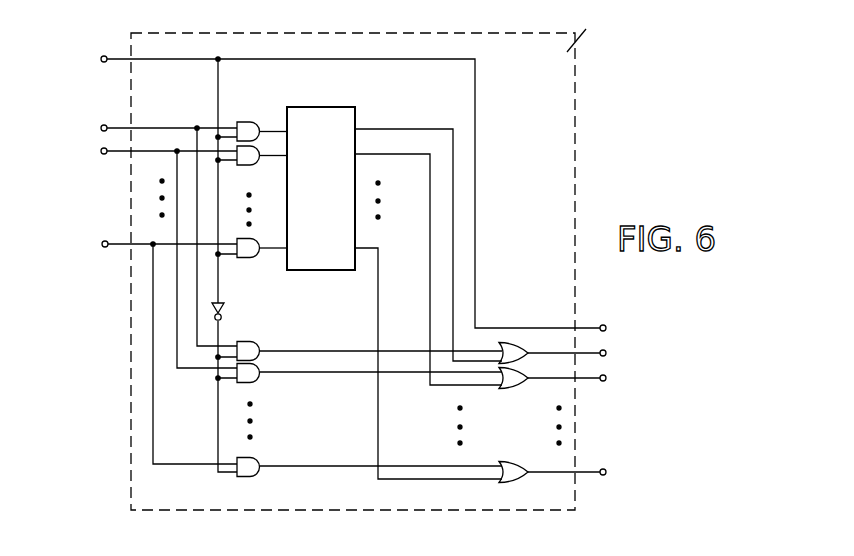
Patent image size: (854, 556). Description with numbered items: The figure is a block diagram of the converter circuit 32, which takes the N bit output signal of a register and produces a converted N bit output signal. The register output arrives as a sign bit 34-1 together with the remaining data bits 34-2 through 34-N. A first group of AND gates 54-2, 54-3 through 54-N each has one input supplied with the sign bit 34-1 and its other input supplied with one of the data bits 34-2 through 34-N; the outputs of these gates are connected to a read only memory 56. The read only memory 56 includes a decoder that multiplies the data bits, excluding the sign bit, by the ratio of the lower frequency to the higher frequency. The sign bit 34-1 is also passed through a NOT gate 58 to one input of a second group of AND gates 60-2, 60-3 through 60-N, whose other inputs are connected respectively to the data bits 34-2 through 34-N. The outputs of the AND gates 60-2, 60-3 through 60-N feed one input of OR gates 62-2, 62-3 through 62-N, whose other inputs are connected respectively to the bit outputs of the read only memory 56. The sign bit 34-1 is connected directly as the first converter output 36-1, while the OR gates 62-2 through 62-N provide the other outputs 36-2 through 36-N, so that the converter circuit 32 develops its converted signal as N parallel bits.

The converter circuit 32 is at (576, 61).
The sign bit 34-1 is at (319, 187).
The bit of the N bit output signal 34-2 is at (137, 230).
The bit of the N bit output signal 34-N is at (137, 347).
The AND gate 54-2 is at (247, 122).
The AND gate 54-3 is at (257, 160).
The AND gate 54-N is at (257, 254).
The read only memory 56 is at (345, 81).
The NOT gate 58 is at (225, 308).
The AND gate 60-2 is at (258, 343).
The AND gate 60-3 is at (258, 380).
The AND gate 60-N is at (258, 475).
The OR gate 62-2 is at (515, 343).
The OR gate 62-3 is at (520, 399).
The OR gate 62-N is at (516, 484).
The parallel bit of the converted output signal 36-1 is at (636, 328).
The parallel bit of the converted output signal 36-2 is at (600, 354).
The parallel bit of the converted output signal 36-N is at (601, 472).